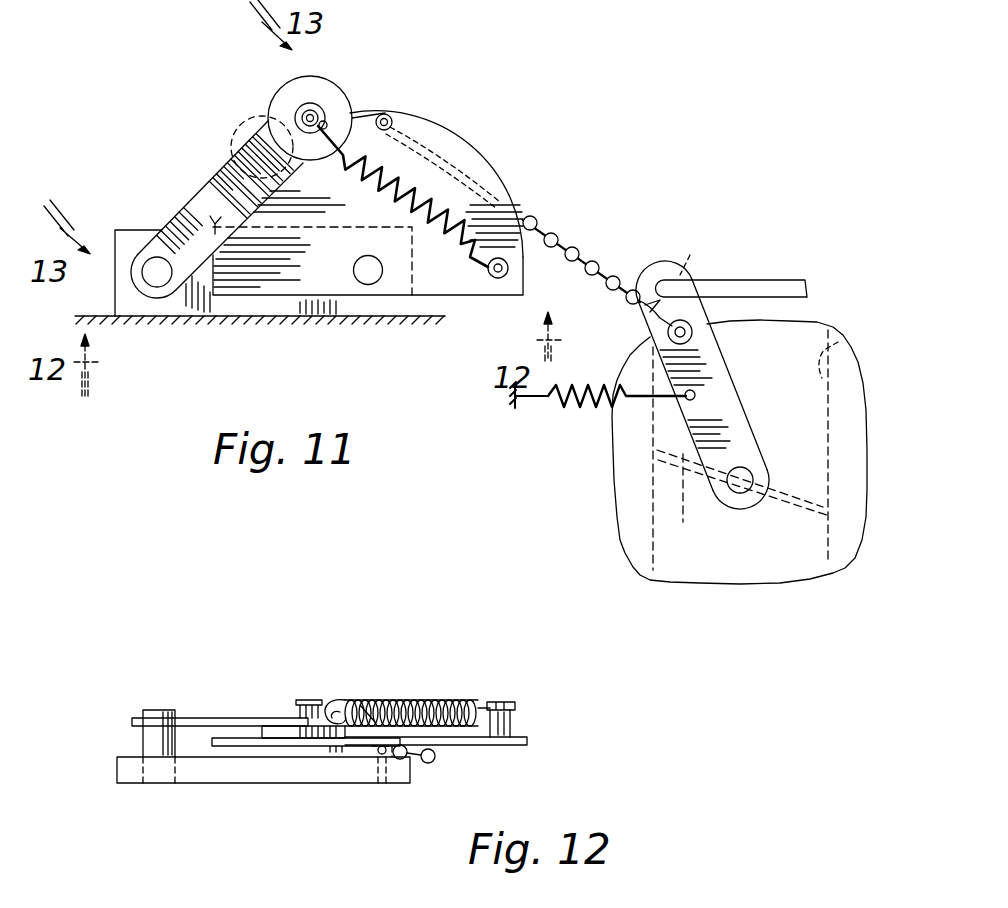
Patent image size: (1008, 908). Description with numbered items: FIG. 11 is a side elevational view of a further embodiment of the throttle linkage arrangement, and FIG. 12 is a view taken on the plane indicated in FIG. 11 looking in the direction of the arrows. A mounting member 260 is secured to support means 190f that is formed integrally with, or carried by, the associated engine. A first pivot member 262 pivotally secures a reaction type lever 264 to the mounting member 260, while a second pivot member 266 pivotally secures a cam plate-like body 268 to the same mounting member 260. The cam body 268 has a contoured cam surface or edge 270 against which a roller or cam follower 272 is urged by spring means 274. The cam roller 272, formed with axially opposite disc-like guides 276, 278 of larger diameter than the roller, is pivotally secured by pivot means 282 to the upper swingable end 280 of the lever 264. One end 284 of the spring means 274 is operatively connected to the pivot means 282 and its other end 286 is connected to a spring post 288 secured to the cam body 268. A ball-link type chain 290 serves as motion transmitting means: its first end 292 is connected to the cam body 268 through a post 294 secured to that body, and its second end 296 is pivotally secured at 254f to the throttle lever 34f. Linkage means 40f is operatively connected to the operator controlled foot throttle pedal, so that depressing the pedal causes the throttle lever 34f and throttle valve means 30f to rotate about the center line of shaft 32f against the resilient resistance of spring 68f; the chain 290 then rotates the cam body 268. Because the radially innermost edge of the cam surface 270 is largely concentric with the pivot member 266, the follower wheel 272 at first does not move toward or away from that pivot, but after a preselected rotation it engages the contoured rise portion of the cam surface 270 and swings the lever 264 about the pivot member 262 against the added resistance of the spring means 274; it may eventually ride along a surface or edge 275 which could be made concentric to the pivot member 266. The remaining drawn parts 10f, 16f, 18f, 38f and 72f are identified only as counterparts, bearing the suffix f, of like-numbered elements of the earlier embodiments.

In FIG. 11, the housing 10f is at (822, 320).
In FIG. 11, the housing wall 16f is at (850, 503).
In FIG. 11, the housing opening 18f is at (840, 343).
In FIG. 11, the throttle valve means 30f is at (683, 500).
In FIG. 11, the shaft 32f is at (742, 494).
In FIG. 11, the throttle lever 34f is at (752, 412).
In FIG. 11, the lever end 38f is at (686, 272).
In FIG. 11, the linkage means 40f is at (752, 280).
In FIG. 11, the spring 68f is at (582, 406).
In FIG. 11, the spring anchor 72f is at (516, 410).
In FIG. 11, the support means 190f is at (432, 317).
In FIG. 11, the pivot connection 254f is at (694, 332).
In FIG. 11, the mounting member 260 is at (133, 240).
In FIG. 12, the mounting member 260 is at (193, 777).
In FIG. 11, the first pivot member 262 is at (166, 290).
In FIG. 12, the first pivot member 262 is at (150, 713).
In FIG. 11, the reaction type lever 264 is at (205, 288).
In FIG. 12, the reaction type lever 264 is at (185, 716).
In FIG. 11, the second pivot member 266 is at (364, 286).
In FIG. 12, the second pivot member 266 is at (368, 710).
In FIG. 11, the cam plate-like body 268 is at (497, 178).
In FIG. 12, the cam plate-like body 268 is at (536, 748).
In FIG. 11, the contoured cam surface 270 is at (340, 106).
In FIG. 11, the cam follower roller 272 is at (257, 122).
In FIG. 11, the spring means 274 is at (395, 212).
In FIG. 12, the spring means 274 is at (440, 698).
In FIG. 11, the cam surface edge 275 is at (214, 222).
In FIG. 12, the disc-like guide 276 is at (266, 748).
In FIG. 11, the disc-like guide 278 is at (272, 96).
In FIG. 12, the disc-like guide 278 is at (266, 726).
In FIG. 11, the upper swingable end of lever 280 is at (308, 95).
In FIG. 11, the pivot means 282 is at (338, 152).
In FIG. 12, the pivot means 282 is at (320, 705).
In FIG. 11, the spring end 284 is at (325, 118).
In FIG. 12, the spring end 284 is at (305, 705).
In FIG. 11, the spring end 286 is at (478, 276).
In FIG. 12, the spring end 286 is at (512, 705).
In FIG. 11, the spring post 288 is at (508, 274).
In FIG. 12, the spring post 288 is at (512, 727).
In FIG. 11, the ball-link type chain 290 is at (585, 260).
In FIG. 12, the ball-link type chain 290 is at (437, 762).
In FIG. 11, the first end of chain 292 is at (414, 118).
In FIG. 12, the first end of chain 292 is at (362, 760).
In FIG. 11, the post 294 is at (392, 115).
In FIG. 12, the post 294 is at (382, 758).
In FIG. 11, the second end of chain 296 is at (650, 322).